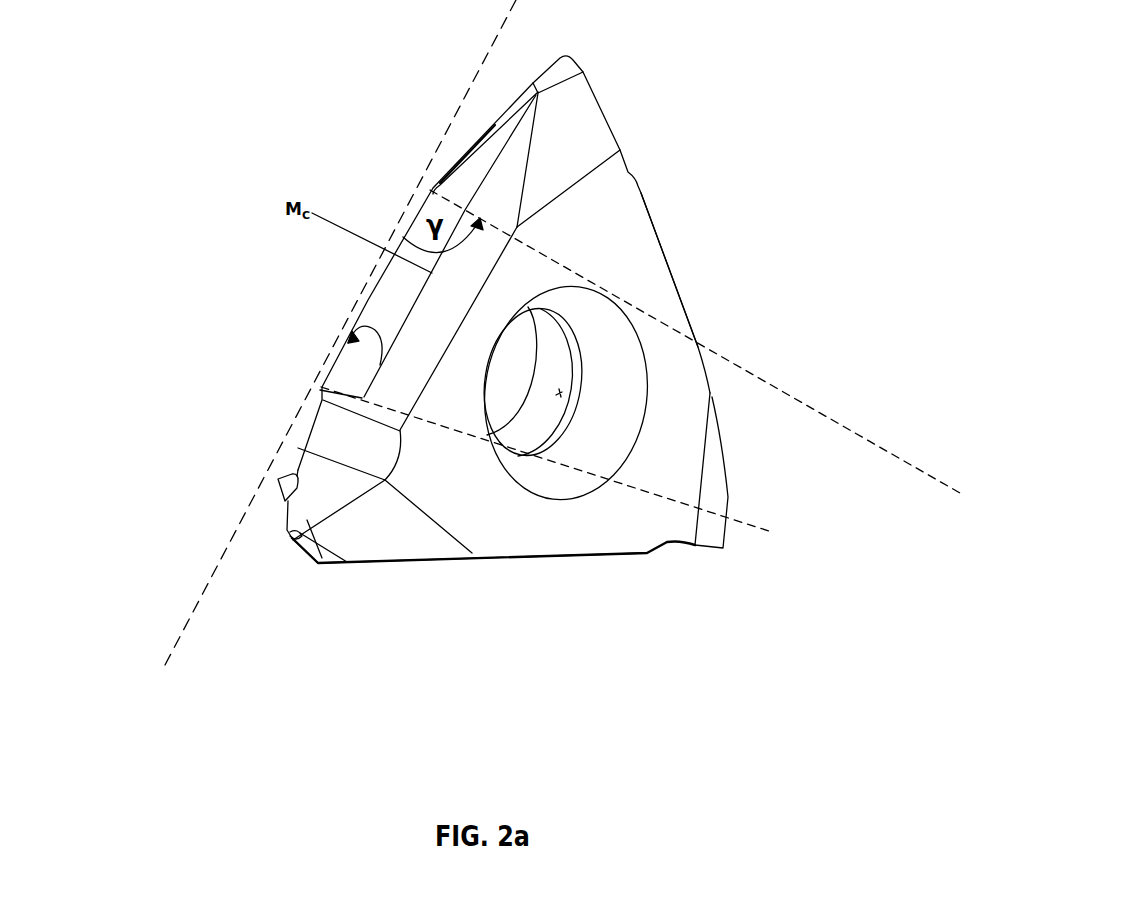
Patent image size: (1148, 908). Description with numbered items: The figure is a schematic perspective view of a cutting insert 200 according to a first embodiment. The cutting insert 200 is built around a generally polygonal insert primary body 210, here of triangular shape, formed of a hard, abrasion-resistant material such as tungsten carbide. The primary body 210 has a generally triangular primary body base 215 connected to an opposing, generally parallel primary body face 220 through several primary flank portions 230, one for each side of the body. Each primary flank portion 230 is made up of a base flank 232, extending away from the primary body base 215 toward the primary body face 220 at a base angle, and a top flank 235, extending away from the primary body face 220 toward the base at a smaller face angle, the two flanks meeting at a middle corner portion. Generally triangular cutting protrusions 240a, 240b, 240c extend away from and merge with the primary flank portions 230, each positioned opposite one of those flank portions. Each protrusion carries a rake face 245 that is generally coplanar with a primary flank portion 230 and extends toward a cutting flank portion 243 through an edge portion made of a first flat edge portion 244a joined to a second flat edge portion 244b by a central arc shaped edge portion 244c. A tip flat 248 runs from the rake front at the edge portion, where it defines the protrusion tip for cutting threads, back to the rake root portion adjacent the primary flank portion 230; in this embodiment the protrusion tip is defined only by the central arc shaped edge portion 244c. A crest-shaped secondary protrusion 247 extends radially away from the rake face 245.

The cutting insert 200 is at (210, 210).
The insert primary body 210 is at (410, 163).
The primary body base 215 is at (465, 140).
The primary body face 220 is at (638, 227).
The primary flank portion 230 is at (348, 323).
The base flank 232 is at (399, 277).
The top flank 235 is at (422, 333).
The cutting protrusion 240a is at (246, 598).
The cutting protrusion 240b is at (740, 540).
The cutting protrusion 240c is at (609, 93).
The cutting flank portion 243 is at (320, 562).
The first flat edge portion 244a is at (288, 512).
The second flat edge portion 244b is at (347, 562).
The central arc shaped edge portion 244c is at (291, 542).
The rake face 245 is at (316, 472).
The secondary protrusion 247 is at (279, 478).
The tip flat 248 is at (290, 528).